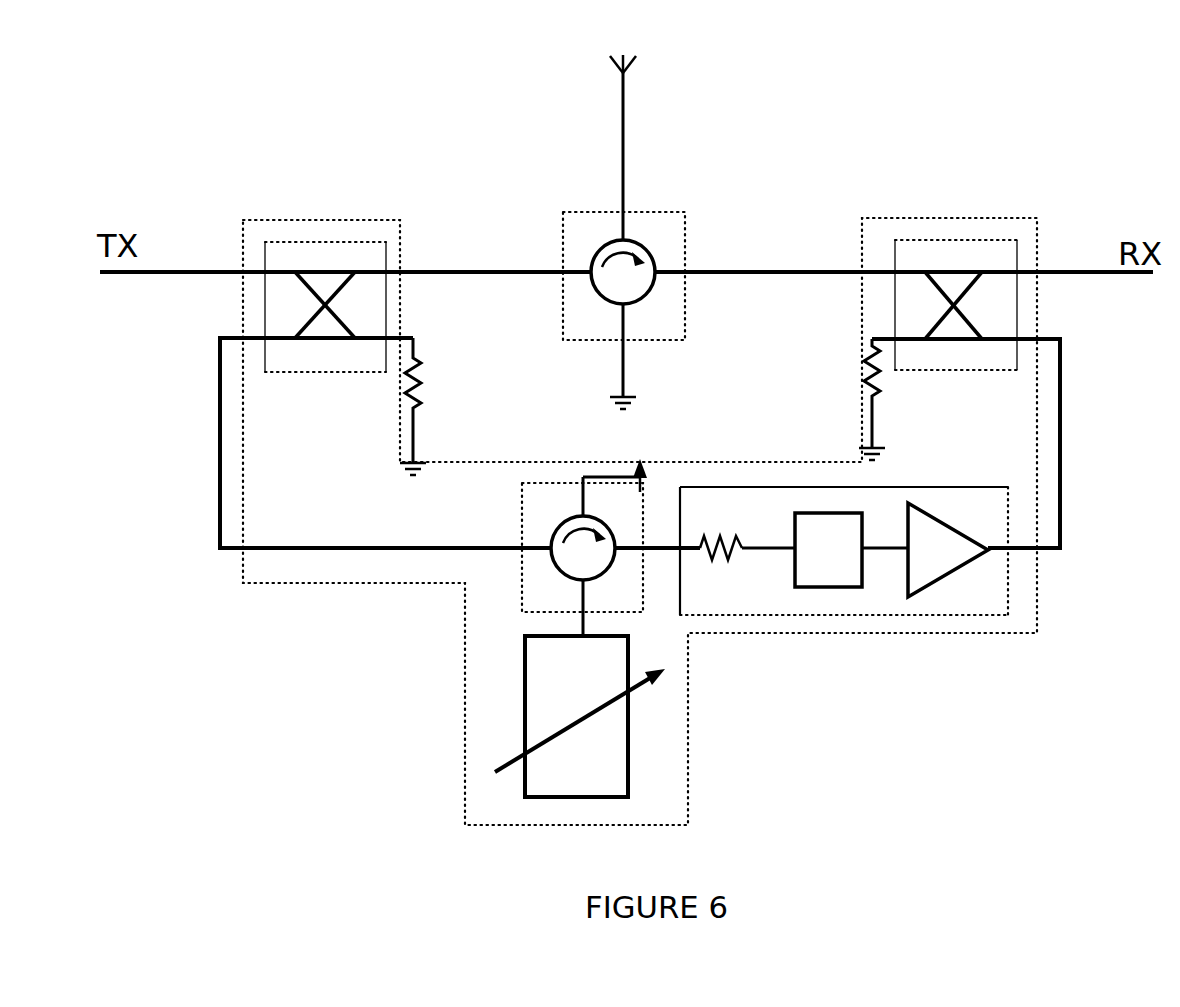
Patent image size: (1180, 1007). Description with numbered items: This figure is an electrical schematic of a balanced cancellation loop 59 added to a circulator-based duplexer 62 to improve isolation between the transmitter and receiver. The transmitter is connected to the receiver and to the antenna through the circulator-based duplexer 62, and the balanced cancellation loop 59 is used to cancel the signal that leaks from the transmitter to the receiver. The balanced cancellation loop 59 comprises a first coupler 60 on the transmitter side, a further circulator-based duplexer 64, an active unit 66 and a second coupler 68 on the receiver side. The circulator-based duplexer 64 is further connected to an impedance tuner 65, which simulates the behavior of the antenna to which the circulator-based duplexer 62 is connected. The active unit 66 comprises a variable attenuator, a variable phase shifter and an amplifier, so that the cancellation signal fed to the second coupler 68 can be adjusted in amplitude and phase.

The balanced cancellation loop 59 is at (690, 637).
The first coupler 60 is at (327, 242).
The circulator-based duplexer 62 is at (687, 212).
The circulator-based duplexer 64 is at (520, 610).
The impedance tuner 65 is at (632, 723).
The active unit 66 is at (845, 617).
The second coupler 68 is at (957, 240).